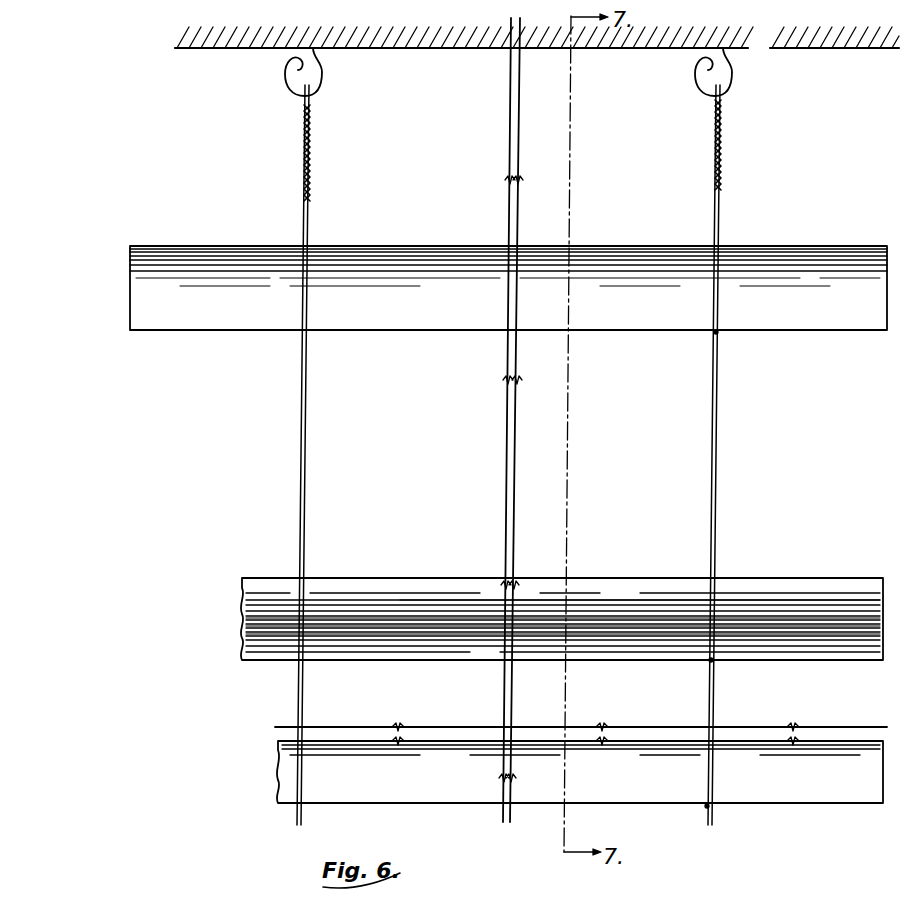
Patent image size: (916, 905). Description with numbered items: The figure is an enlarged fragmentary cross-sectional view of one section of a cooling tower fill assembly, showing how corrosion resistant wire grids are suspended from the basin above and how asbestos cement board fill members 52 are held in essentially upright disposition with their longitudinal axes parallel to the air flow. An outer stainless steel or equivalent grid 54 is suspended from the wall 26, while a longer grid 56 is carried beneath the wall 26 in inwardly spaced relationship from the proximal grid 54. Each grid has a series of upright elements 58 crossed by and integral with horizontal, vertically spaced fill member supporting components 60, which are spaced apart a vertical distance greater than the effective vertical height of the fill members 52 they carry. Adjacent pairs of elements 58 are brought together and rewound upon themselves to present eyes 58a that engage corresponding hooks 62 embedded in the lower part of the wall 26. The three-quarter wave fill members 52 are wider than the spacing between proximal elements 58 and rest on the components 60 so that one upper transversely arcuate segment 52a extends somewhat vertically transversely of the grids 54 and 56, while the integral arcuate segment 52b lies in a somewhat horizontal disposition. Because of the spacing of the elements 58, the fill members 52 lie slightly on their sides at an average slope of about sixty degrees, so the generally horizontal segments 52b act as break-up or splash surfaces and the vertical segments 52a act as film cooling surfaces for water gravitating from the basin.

The wall 26 is at (425, 40).
The asbestos cement board fill member 52 is at (794, 578).
The upper transversely arcuate segment 52a is at (733, 603).
The arcuate segment 52b is at (793, 652).
The outer grid 54 is at (318, 474).
The longer grid 56 is at (727, 404).
The upright element 58 is at (717, 467).
The eye 58a is at (312, 125).
The fill member supporting component 60 is at (714, 333).
The hook 62 is at (325, 72).